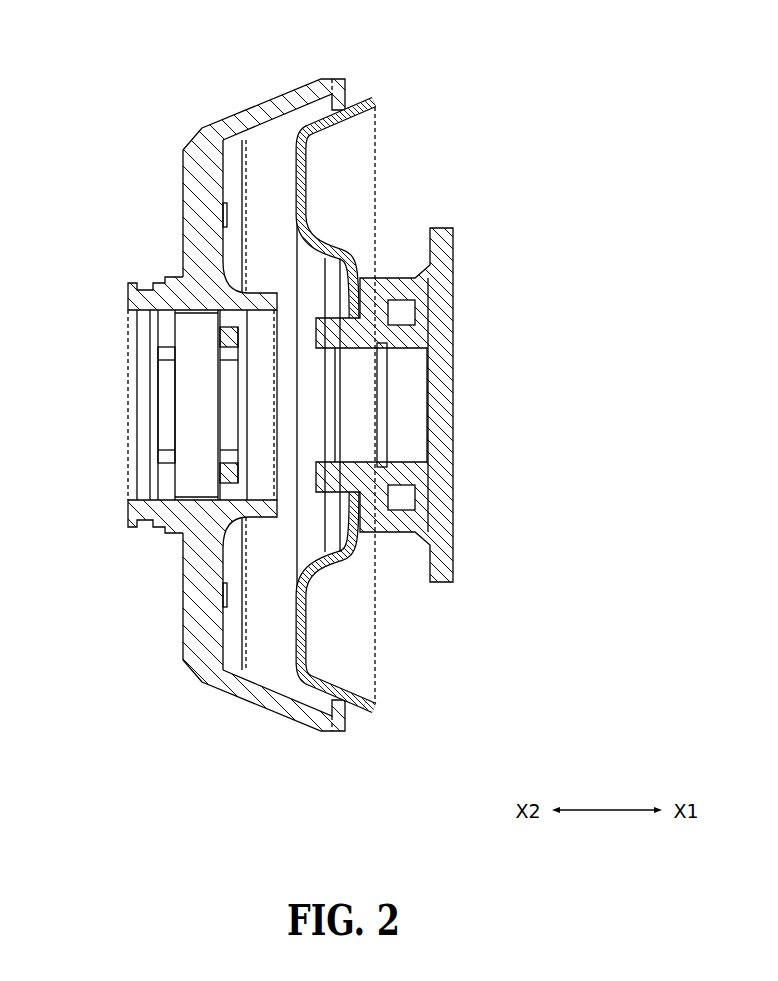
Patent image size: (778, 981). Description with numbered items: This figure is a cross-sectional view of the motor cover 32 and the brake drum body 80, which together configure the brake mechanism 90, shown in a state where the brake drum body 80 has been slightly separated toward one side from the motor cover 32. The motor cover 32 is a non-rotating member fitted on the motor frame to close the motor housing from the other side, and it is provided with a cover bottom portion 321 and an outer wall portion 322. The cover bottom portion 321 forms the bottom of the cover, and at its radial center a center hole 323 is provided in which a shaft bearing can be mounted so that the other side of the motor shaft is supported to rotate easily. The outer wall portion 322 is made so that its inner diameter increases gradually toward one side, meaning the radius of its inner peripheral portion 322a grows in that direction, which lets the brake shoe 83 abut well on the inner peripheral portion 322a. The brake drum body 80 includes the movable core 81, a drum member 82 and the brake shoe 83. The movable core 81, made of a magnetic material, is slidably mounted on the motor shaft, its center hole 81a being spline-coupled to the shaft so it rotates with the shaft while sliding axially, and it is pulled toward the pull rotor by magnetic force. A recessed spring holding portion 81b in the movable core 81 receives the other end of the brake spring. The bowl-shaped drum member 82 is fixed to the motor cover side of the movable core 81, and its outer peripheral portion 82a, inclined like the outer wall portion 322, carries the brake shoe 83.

The motor cover 32 is at (190, 142).
The cover bottom portion 321 is at (182, 207).
The outer wall portion 322 is at (258, 707).
The inner peripheral portion 322a is at (291, 125).
The center hole 323 is at (190, 478).
The brake drum body 80 is at (377, 439).
The movable core 81 is at (430, 405).
The center hole 81a is at (403, 457).
The spring holding portion 81b is at (413, 312).
The drum member 82 is at (323, 563).
The outer peripheral portion 82a is at (347, 682).
The brake shoe 83 is at (355, 713).
The brake mechanism 90 is at (357, 97).